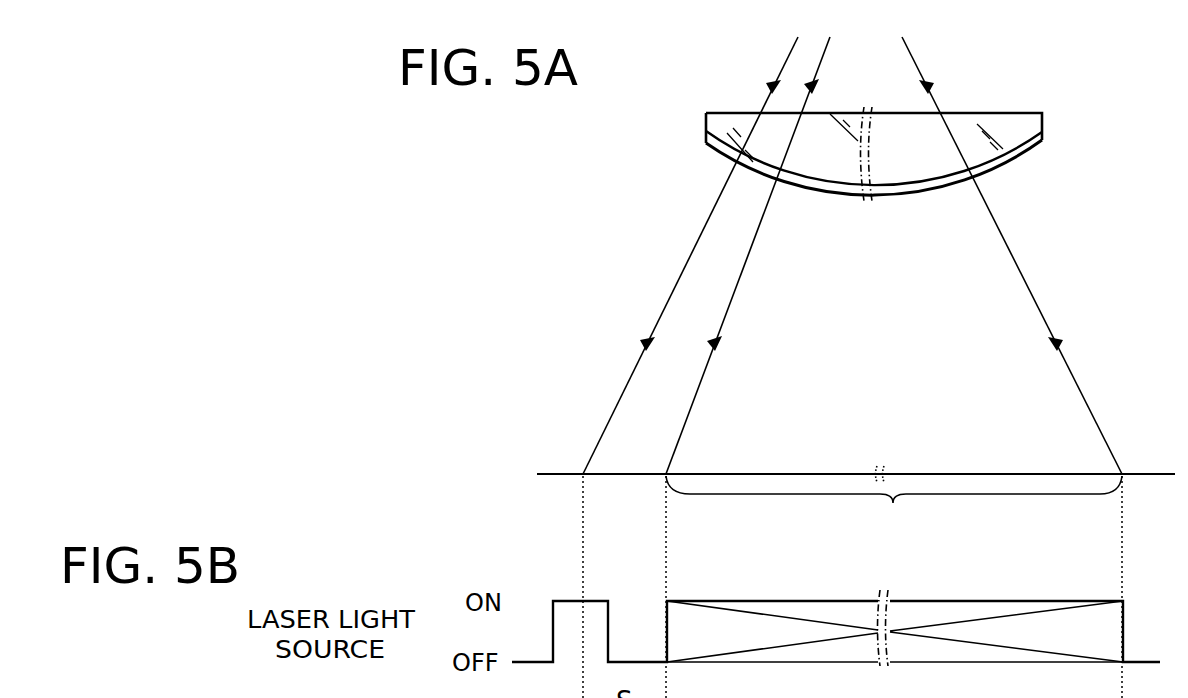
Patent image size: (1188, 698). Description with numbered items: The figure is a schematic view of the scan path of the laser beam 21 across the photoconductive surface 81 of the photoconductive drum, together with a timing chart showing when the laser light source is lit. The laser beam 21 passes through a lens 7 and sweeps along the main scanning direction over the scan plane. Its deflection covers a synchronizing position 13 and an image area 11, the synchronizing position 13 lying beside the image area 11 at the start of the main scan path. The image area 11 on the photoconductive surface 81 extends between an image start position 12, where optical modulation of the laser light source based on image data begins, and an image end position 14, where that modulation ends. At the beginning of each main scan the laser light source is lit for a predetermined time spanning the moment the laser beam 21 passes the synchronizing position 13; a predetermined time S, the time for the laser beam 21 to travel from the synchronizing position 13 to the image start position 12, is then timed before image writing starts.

The lens 7 is at (730, 117).
The laser beam 21 is at (822, 59).
The photoconductive surface 81 is at (984, 470).
The synchronizing position 13 is at (583, 474).
The image start position 12 is at (666, 474).
The image end position 14 is at (1122, 474).
The image area 11 is at (894, 507).